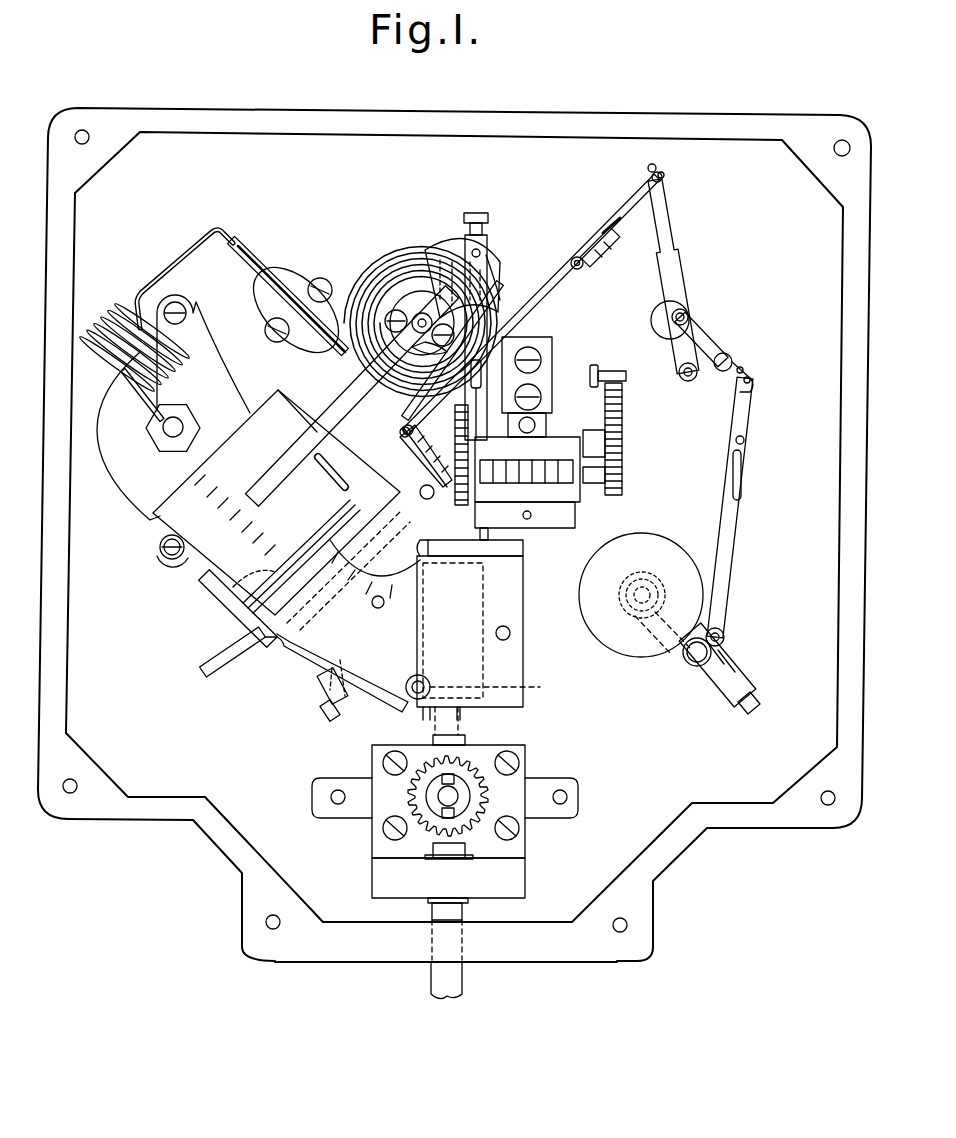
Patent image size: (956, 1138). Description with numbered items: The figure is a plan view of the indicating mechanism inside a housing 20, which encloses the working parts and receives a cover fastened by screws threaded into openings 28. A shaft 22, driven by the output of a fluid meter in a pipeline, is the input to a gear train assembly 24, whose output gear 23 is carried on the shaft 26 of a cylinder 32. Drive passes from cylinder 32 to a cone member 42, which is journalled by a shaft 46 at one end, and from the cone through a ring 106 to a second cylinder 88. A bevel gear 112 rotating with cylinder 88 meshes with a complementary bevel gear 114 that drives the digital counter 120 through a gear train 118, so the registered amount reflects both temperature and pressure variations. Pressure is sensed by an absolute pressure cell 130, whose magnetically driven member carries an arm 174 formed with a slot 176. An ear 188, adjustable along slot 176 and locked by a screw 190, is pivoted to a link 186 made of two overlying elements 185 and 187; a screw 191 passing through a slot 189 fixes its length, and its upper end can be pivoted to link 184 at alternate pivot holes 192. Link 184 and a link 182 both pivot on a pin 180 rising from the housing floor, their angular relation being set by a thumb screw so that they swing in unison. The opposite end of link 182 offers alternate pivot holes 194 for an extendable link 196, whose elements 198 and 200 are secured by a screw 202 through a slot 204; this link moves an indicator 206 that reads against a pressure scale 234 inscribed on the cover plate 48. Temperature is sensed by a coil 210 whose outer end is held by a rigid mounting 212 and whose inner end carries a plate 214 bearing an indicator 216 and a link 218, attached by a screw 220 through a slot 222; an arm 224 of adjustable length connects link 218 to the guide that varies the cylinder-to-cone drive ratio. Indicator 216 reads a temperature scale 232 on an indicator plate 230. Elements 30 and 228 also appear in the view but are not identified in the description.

The housing 20 is at (205, 122).
The shaft 22 is at (462, 992).
The output gear 23 is at (472, 758).
The gear train assembly 24 is at (540, 764).
The shaft 26 is at (433, 738).
The threaded openings 28 is at (82, 130).
The arm 30 is at (280, 652).
The cylinder 32 is at (488, 683).
The cone member 42 is at (318, 680).
The shaft 46 is at (330, 720).
The cover plate 48 is at (508, 612).
The cylinder 88 is at (212, 600).
The ring 106 is at (320, 468).
The bevel gear 112 is at (404, 430).
The complementary bevel gear 114 is at (430, 426).
The gear train 118 is at (628, 428).
The digital counter 120 is at (556, 412).
The absolute pressure cell 130 is at (640, 522).
The arm 174 is at (732, 678).
The slot 176 is at (722, 700).
The pin 180 is at (690, 305).
The link 182 is at (680, 262).
The link 184 is at (712, 340).
The element 185 is at (722, 590).
The link 186 is at (658, 370).
The element 187 is at (746, 412).
The ear 188 is at (725, 640).
The slot 189 is at (742, 476).
The screw 190 is at (690, 666).
The screw 191 is at (746, 441).
The alternate pivot holes 192 is at (748, 368).
The alternate pivot holes 194 is at (662, 172).
The extendable link 196 is at (638, 236).
The element 198 is at (538, 294).
The element 200 is at (625, 205).
The screw 202 is at (592, 232).
The slot 204 is at (582, 270).
The indicator 206 is at (345, 507).
The temperature sensing coil 210 is at (372, 258).
The rigid mounting 212 is at (300, 272).
The plate 214 is at (436, 230).
The indicator 216 is at (345, 400).
The link 218 is at (490, 248).
The screw 220 is at (490, 288).
The slot 222 is at (482, 266).
The arm 224 is at (500, 395).
The rod 228 is at (168, 262).
The indicator plate 230 is at (158, 540).
The temperature scale 232 is at (200, 480).
The pressure scale 234 is at (346, 590).